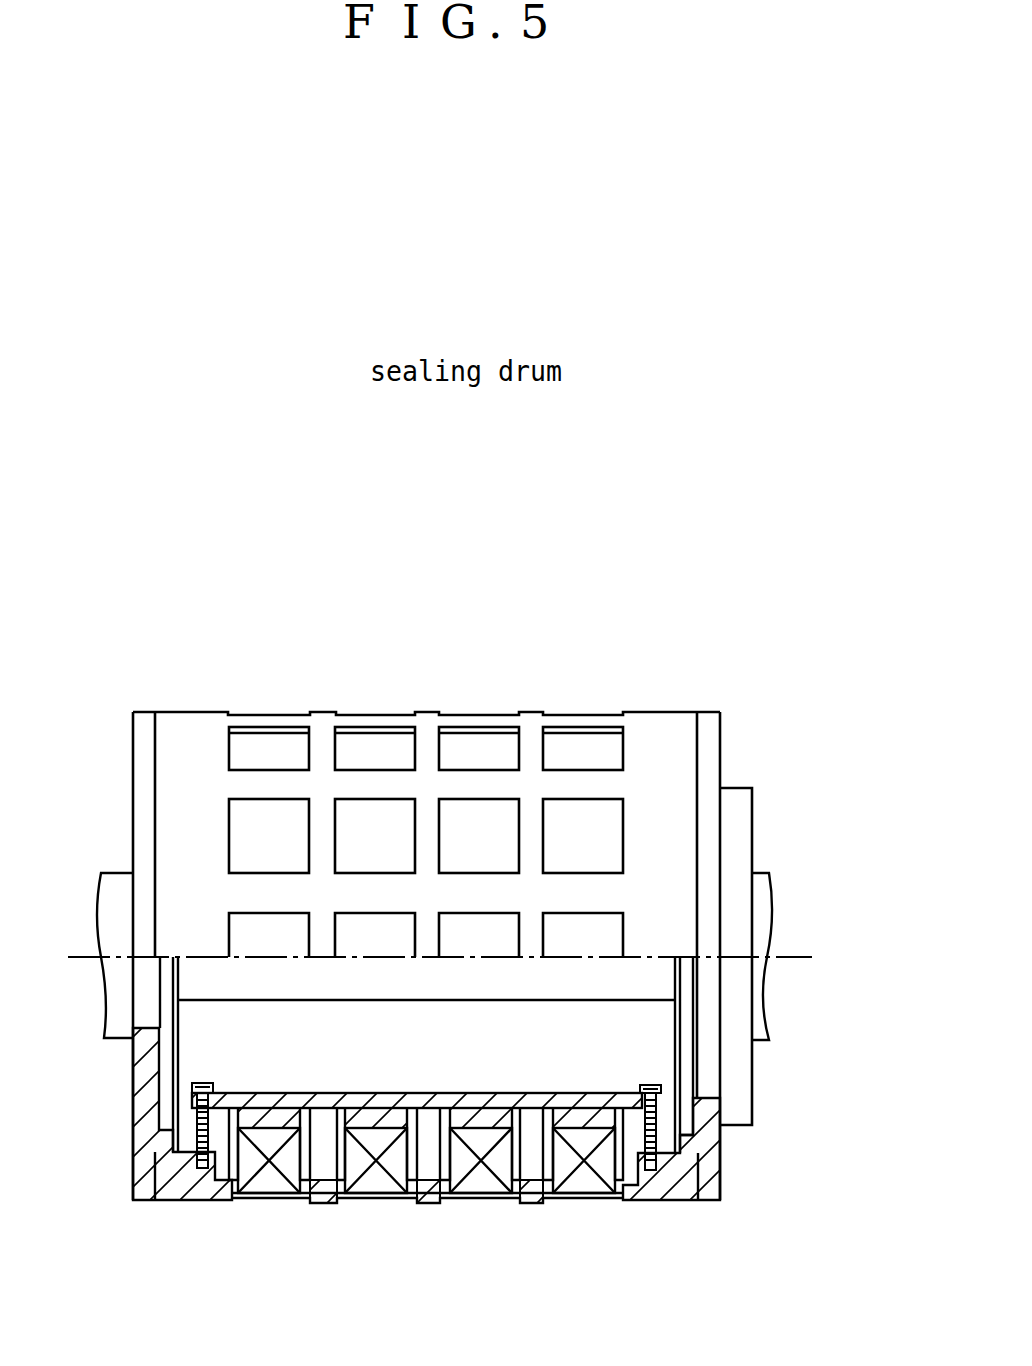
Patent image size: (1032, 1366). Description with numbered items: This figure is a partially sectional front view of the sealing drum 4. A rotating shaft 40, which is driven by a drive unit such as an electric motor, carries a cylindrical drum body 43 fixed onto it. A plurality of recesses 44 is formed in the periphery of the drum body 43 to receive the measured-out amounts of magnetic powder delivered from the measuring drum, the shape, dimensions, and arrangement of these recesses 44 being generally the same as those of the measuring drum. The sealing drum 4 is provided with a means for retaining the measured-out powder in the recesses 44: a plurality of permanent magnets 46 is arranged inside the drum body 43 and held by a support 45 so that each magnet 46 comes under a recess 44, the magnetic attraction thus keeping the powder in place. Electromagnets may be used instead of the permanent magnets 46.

The sealing drum 4 is at (448, 578).
The rotating shaft 40 is at (760, 937).
The drum body 43 is at (673, 714).
The recesses 44 is at (360, 745).
The support 45 is at (422, 1102).
The permanent magnets 46 is at (380, 1132).